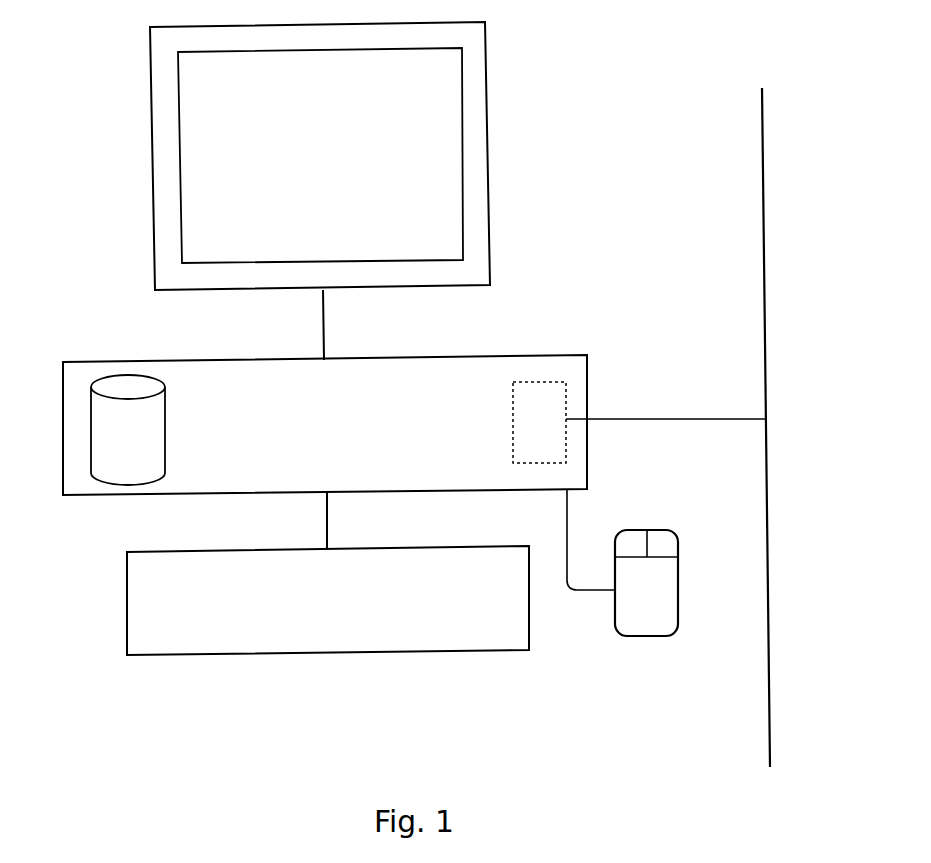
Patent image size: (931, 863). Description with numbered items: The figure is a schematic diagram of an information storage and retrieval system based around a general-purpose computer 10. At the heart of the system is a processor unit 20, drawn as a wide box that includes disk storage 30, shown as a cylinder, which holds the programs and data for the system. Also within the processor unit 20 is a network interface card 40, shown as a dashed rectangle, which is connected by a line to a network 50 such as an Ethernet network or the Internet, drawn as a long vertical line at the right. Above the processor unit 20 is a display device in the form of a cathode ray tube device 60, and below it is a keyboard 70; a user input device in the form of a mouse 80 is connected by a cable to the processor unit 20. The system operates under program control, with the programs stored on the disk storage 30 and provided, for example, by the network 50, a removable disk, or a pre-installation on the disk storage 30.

The general-purpose computer 10 is at (63, 113).
The processor unit 20 is at (510, 355).
The disk storage 30 is at (127, 373).
The network interface card 40 is at (567, 405).
The network 50 is at (765, 300).
The cathode ray tube device 60 is at (488, 138).
The keyboard 70 is at (478, 652).
The mouse 80 is at (640, 637).